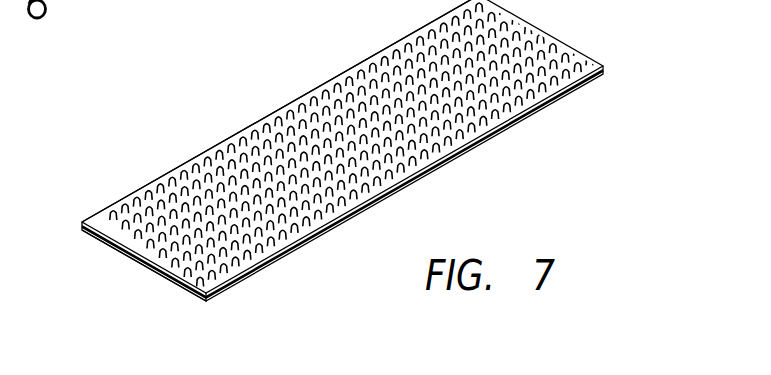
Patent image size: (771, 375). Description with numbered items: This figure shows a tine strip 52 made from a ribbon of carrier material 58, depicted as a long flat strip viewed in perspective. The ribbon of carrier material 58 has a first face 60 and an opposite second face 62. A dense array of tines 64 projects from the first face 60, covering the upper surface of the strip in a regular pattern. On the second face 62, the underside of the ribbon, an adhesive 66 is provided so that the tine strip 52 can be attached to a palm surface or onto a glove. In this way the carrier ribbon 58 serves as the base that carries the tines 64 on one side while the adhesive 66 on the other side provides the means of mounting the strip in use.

The tine strip 52 is at (308, 158).
The ribbon of carrier material 58 is at (93, 216).
The first face 60 is at (100, 212).
The second face 62 is at (84, 240).
The tines 64 is at (195, 182).
The adhesive 66 is at (110, 247).